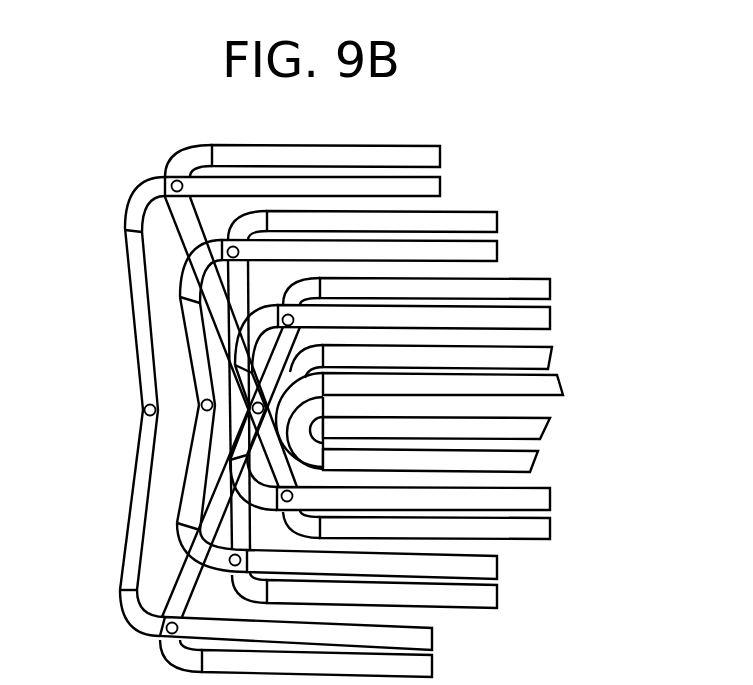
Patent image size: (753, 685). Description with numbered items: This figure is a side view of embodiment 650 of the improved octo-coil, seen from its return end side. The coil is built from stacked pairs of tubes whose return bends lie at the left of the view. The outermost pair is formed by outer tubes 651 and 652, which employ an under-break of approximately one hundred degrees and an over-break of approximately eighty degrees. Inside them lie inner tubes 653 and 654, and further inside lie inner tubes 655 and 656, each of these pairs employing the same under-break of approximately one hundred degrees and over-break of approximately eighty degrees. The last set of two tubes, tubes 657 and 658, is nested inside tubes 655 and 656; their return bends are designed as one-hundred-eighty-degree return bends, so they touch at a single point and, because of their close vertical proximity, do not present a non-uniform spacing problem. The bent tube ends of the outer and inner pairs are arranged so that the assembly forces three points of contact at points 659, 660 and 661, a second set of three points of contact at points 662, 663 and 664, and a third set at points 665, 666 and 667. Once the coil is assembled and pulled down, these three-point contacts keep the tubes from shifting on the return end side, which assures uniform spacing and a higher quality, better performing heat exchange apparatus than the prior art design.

The embodiment 650 is at (443, 130).
The outer tube 651 is at (440, 157).
The outer tube 652 is at (440, 186).
The inner tube 653 is at (497, 222).
The inner tube 654 is at (497, 248).
The inner tube 655 is at (550, 287).
The inner tube 656 is at (550, 320).
The tube 657 is at (553, 357).
The tube 658 is at (563, 385).
The point of contact 659 is at (171, 186).
The point of contact 660 is at (144, 410).
The point of contact 661 is at (166, 630).
The point of contact 662 is at (128, 262).
The point of contact 663 is at (200, 405).
The point of contact 664 is at (229, 560).
The point of contact 665 is at (282, 319).
The point of contact 666 is at (252, 408).
The point of contact 667 is at (281, 498).